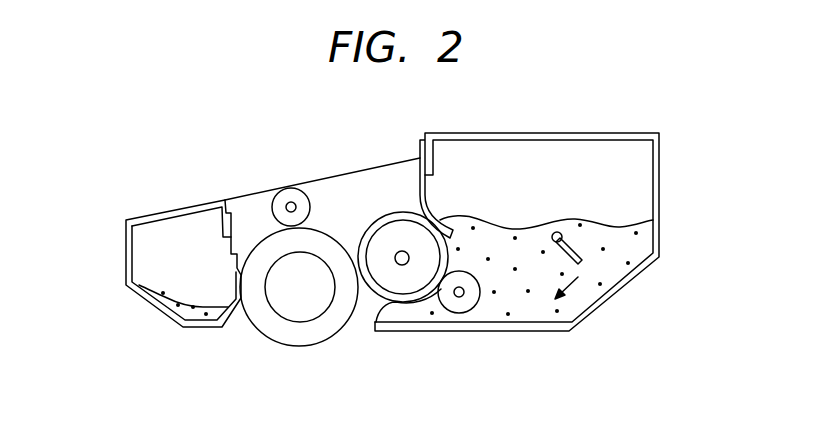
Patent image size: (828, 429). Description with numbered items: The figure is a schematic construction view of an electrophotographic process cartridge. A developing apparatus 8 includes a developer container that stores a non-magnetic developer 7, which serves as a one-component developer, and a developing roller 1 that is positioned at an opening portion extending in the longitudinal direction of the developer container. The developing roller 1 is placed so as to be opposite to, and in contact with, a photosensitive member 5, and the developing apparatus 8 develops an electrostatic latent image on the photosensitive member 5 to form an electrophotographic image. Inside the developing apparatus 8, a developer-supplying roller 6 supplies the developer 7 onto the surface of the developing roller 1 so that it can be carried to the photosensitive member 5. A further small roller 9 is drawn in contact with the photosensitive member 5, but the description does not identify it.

The developing roller 1 is at (403, 282).
The photosensitive member 5 is at (255, 330).
The developer-supplying roller 6 is at (468, 305).
The non-magnetic developer 7 is at (532, 243).
The developing apparatus 8 is at (618, 293).
The charging roller 9 is at (277, 201).